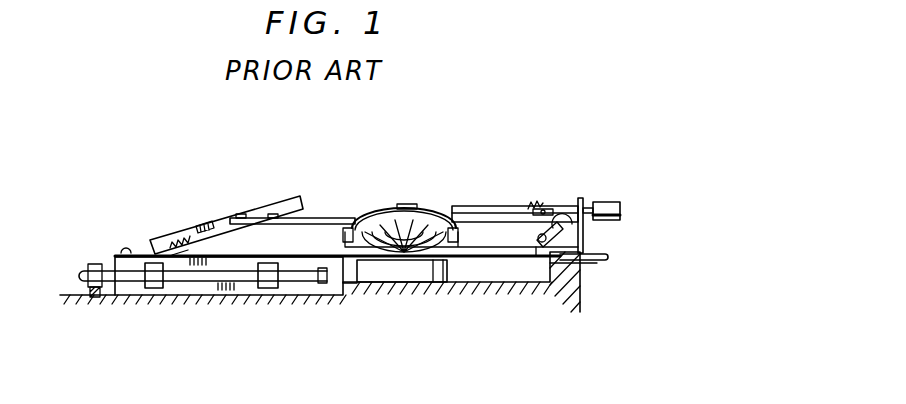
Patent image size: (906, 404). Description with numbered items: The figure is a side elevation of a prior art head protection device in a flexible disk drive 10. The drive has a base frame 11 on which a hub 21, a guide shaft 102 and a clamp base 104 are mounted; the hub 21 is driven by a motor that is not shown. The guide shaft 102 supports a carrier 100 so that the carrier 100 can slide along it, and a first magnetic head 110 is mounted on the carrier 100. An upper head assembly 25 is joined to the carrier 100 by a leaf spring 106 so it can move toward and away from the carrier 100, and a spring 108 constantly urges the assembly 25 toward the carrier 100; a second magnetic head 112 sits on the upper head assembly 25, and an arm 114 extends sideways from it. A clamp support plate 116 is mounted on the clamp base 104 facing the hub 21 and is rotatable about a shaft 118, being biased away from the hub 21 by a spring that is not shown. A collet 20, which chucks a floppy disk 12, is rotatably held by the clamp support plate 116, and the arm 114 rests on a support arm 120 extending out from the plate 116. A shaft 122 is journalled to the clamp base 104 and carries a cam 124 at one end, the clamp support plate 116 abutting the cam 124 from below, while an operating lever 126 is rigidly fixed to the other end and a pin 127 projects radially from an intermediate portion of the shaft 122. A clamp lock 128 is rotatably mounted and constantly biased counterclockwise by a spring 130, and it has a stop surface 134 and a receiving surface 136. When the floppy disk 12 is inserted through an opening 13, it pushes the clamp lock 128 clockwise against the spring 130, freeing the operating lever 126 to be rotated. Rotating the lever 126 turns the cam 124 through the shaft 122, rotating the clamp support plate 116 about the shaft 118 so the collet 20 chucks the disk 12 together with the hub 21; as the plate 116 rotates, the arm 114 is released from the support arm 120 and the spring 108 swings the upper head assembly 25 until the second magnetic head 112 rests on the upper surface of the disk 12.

The flexible disk drive 10 is at (532, 121).
The base frame 11 is at (80, 296).
The floppy disk 12 is at (598, 264).
The opening 13 is at (606, 260).
The collet 20 is at (372, 213).
The hub 21 is at (405, 278).
The upper head assembly 25 is at (164, 240).
The carrier 100 is at (225, 265).
The guide shaft 102 is at (182, 272).
The clamp base 104 is at (584, 220).
The leaf spring 106 is at (140, 255).
The spring 108 is at (193, 240).
The first magnetic head 110 is at (289, 262).
The second magnetic head 112 is at (273, 215).
The arm 114 is at (241, 216).
The clamp support plate 116 is at (433, 216).
The shaft 118 is at (345, 233).
The support arm 120 is at (316, 218).
The shaft 122 is at (487, 212).
The cam 124 is at (407, 206).
The operating lever 126 is at (610, 210).
The pin 127 is at (548, 208).
The clamp lock 128 is at (545, 250).
The spring 130 is at (574, 226).
The stop surface 134 is at (570, 236).
The receiving surface 136 is at (542, 209).